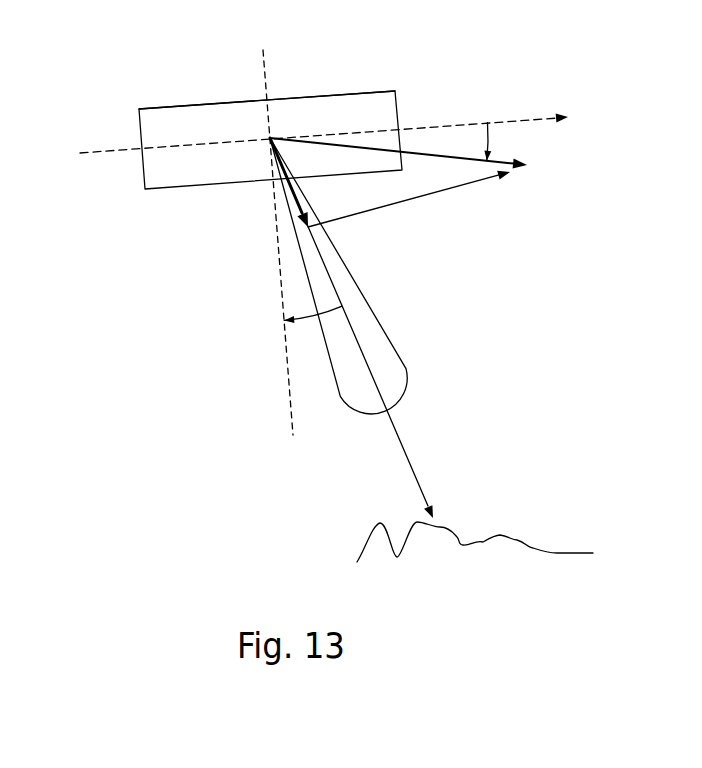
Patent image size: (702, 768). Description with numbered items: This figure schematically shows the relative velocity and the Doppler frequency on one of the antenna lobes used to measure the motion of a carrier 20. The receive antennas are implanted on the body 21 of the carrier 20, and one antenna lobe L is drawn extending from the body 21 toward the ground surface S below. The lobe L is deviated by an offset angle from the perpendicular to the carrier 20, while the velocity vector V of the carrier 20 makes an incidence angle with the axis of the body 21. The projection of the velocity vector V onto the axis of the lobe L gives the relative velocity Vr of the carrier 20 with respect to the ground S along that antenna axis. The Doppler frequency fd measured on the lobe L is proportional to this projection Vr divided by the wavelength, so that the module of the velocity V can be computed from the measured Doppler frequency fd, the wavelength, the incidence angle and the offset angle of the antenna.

The carrier 20 is at (148, 85).
The body of the carrier 21 is at (323, 92).
The module of the velocity V is at (453, 190).
The projection of the velocity vector onto the antenna axis Vr is at (273, 178).
The antenna lobe L is at (380, 323).
The Doppler frequency fd is at (361, 328).
The surface S is at (532, 547).